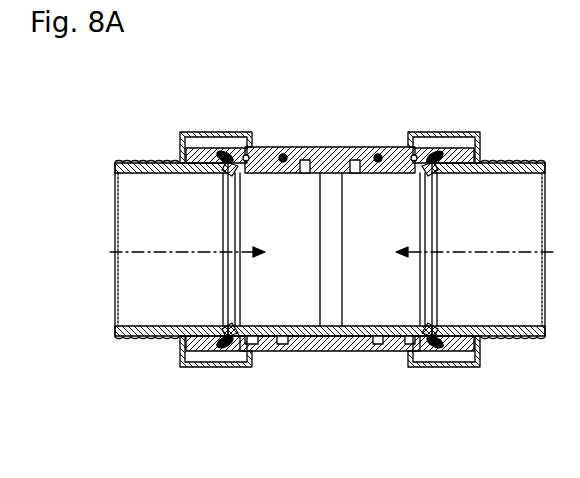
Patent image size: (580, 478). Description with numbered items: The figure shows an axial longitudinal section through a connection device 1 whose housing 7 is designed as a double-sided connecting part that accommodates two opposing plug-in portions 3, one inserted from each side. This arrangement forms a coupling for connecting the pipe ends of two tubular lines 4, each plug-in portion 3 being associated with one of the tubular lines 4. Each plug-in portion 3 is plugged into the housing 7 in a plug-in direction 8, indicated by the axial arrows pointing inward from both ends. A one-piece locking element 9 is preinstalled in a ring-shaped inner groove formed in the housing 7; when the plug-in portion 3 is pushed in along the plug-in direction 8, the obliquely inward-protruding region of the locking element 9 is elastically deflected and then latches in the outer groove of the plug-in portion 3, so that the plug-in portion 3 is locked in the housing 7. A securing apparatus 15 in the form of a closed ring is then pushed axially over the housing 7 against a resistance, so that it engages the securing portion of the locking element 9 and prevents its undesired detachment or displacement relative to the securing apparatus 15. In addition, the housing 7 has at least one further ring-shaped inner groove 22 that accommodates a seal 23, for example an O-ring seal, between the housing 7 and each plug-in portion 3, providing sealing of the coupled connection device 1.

The connection device 1 is at (163, 82).
The plug-in portion 3 is at (320, 128).
The tubular line 4 is at (145, 165).
The housing 7 is at (330, 148).
The plug-in direction 8 is at (331, 239).
The locking element 9 is at (222, 346).
The securing apparatus 15 is at (224, 366).
The ring-shaped inner groove 22 is at (283, 345).
The seal 23 is at (283, 155).